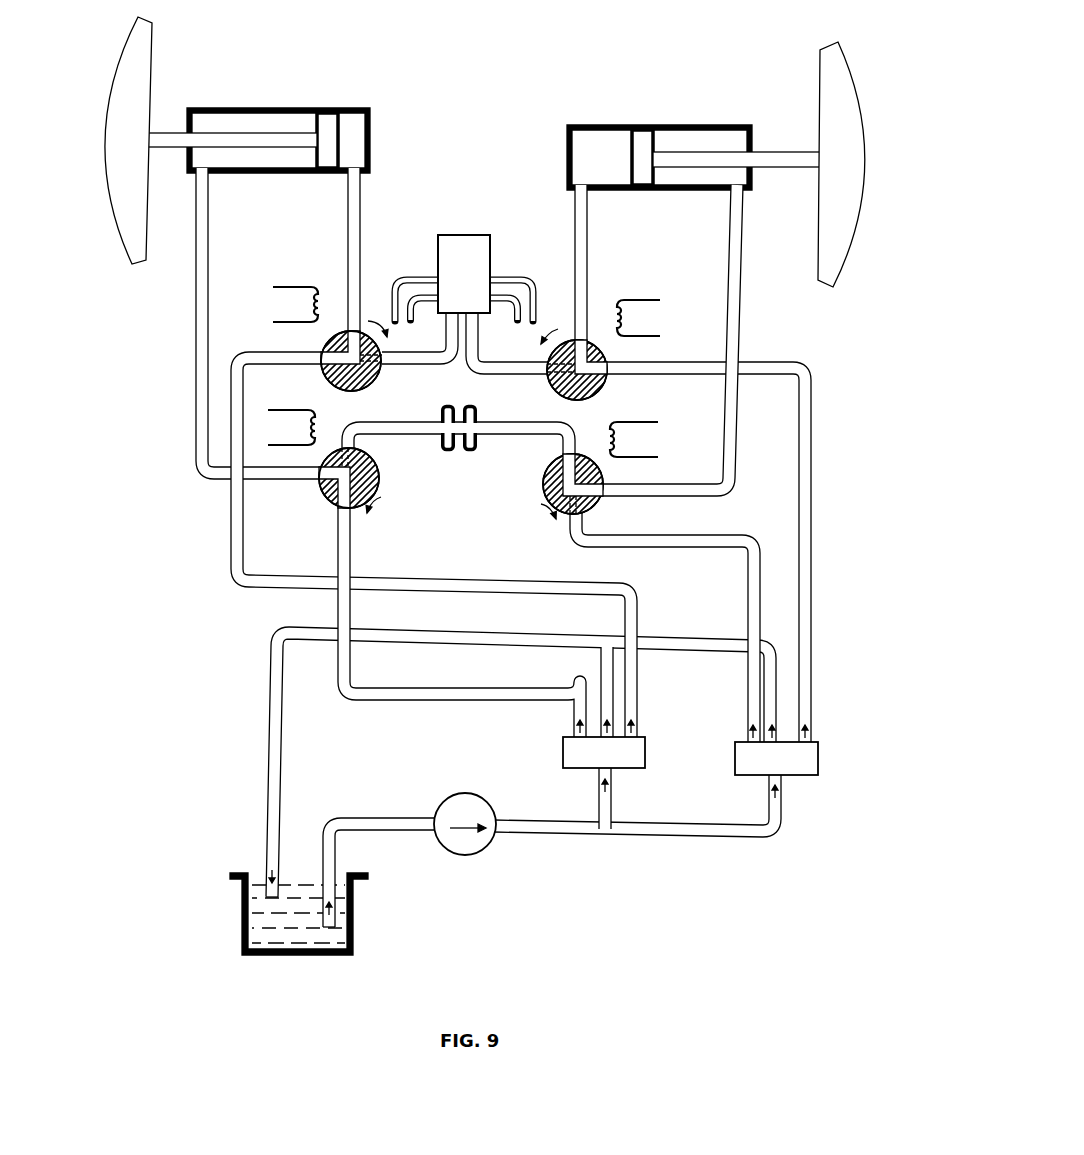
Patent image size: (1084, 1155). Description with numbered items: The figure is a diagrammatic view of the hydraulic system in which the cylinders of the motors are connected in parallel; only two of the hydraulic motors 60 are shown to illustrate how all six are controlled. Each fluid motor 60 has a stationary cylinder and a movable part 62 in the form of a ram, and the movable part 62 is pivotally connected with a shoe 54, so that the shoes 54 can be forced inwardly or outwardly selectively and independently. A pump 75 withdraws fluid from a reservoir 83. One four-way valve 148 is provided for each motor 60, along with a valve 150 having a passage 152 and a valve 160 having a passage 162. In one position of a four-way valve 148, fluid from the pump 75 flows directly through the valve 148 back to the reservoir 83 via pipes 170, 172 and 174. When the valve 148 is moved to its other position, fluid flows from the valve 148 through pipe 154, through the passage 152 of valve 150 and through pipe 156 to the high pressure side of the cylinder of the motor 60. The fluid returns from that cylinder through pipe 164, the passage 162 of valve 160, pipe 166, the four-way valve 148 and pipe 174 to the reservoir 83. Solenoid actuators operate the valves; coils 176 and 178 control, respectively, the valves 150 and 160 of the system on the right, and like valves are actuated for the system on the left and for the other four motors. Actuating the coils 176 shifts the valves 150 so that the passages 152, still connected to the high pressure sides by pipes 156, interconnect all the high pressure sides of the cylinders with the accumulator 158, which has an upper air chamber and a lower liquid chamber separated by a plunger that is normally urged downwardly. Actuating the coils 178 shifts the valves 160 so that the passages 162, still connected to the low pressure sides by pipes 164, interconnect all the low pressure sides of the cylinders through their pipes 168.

The shoe 54 is at (140, 47).
The fluid motor 60 is at (257, 110).
The movable part 62 is at (165, 132).
The pump 75 is at (458, 855).
The reservoir 83 is at (302, 955).
The four-way valve 148 is at (563, 752).
The valve 150 is at (600, 389).
The passage 152 is at (605, 353).
The pipe 154 is at (814, 531).
The pipe 156 is at (586, 266).
The accumulator 158 is at (467, 234).
The valve 160 is at (597, 507).
The passage 162 is at (602, 470).
The pipe 164 is at (740, 300).
The pipe 166 is at (705, 535).
The pipe 168 is at (492, 423).
The pipe 170 is at (545, 838).
The pipe 172 is at (230, 546).
The pipe 174 is at (270, 745).
The coil 176 is at (625, 317).
The coil 178 is at (624, 440).